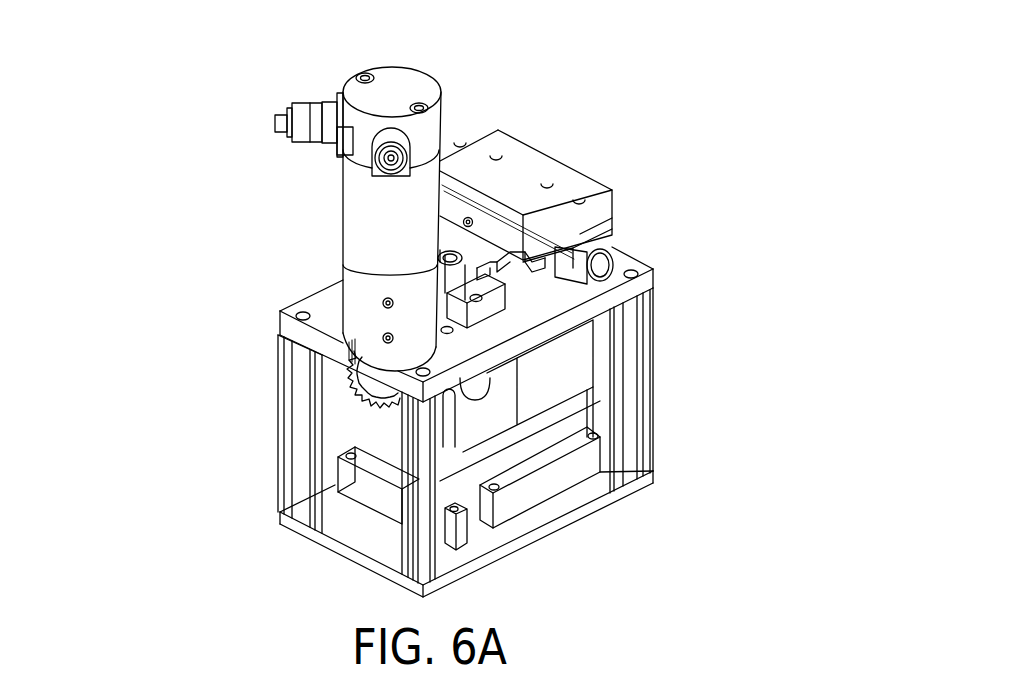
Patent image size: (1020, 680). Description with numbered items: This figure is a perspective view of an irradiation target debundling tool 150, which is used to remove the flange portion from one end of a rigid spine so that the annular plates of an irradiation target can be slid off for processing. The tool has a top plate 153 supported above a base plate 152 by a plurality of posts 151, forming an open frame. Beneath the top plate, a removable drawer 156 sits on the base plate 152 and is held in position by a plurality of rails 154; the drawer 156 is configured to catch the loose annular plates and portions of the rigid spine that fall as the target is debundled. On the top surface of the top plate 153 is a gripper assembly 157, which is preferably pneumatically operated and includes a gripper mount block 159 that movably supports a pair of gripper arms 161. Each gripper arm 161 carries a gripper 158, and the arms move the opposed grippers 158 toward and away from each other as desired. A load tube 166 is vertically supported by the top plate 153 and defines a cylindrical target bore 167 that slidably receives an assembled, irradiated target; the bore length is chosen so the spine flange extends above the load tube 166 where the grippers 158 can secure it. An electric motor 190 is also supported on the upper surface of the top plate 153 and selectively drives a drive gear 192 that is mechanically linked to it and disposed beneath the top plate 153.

The irradiation target debundling tool 150 is at (205, 74).
The posts 151 is at (653, 412).
The base plate 152 is at (540, 540).
The top plate 153 is at (648, 280).
The rails 154 is at (362, 524).
The removable drawer 156 is at (553, 400).
The gripper assembly 157 is at (572, 164).
The gripper 158 is at (500, 278).
The gripper mount block 159 is at (452, 170).
The gripper arms 161 is at (577, 237).
The load tube 166 is at (460, 283).
The target bore 167 is at (460, 253).
The electric motor 190 is at (330, 223).
The drive gear 192 is at (333, 387).